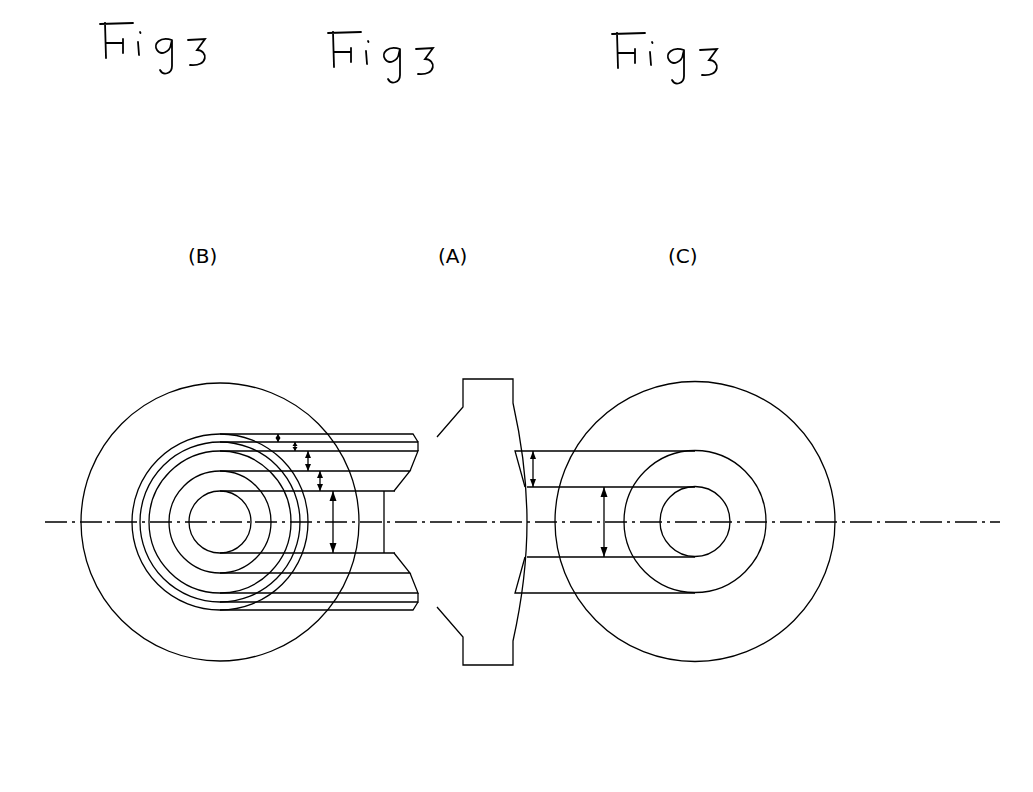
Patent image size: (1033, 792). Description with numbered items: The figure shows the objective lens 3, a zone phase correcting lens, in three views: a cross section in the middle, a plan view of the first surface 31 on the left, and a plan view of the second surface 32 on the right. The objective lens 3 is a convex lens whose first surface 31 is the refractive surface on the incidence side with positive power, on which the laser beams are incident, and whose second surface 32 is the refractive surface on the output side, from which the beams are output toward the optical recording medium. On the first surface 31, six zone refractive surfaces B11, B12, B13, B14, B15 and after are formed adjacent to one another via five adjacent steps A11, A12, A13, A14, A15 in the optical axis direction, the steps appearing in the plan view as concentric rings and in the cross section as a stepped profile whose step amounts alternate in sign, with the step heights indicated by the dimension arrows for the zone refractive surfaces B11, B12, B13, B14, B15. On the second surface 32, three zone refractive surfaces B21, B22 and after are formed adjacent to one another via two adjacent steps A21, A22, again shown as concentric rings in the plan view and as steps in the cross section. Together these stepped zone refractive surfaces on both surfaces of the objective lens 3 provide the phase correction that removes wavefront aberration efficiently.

The objective lens 3 is at (220, 368).
The first surface 31 is at (137, 432).
The second surface 32 is at (528, 401).
The adjacent step A11 is at (187, 532).
The adjacent step A12 is at (177, 547).
The adjacent step A13 is at (160, 568).
The adjacent step A14 is at (163, 583).
The adjacent step A15 is at (208, 610).
The adjacent step A21 is at (520, 517).
The adjacent step A22 is at (516, 449).
The zone refractive surface B11 is at (340, 525).
The zone refractive surface B12 is at (326, 481).
The zone refractive surface B13 is at (300, 447).
The zone refractive surface B14 is at (312, 460).
The zone refractive surface B15 is at (280, 437).
The zone refractive surface B21 is at (598, 530).
The zone refractive surface B22 is at (538, 468).